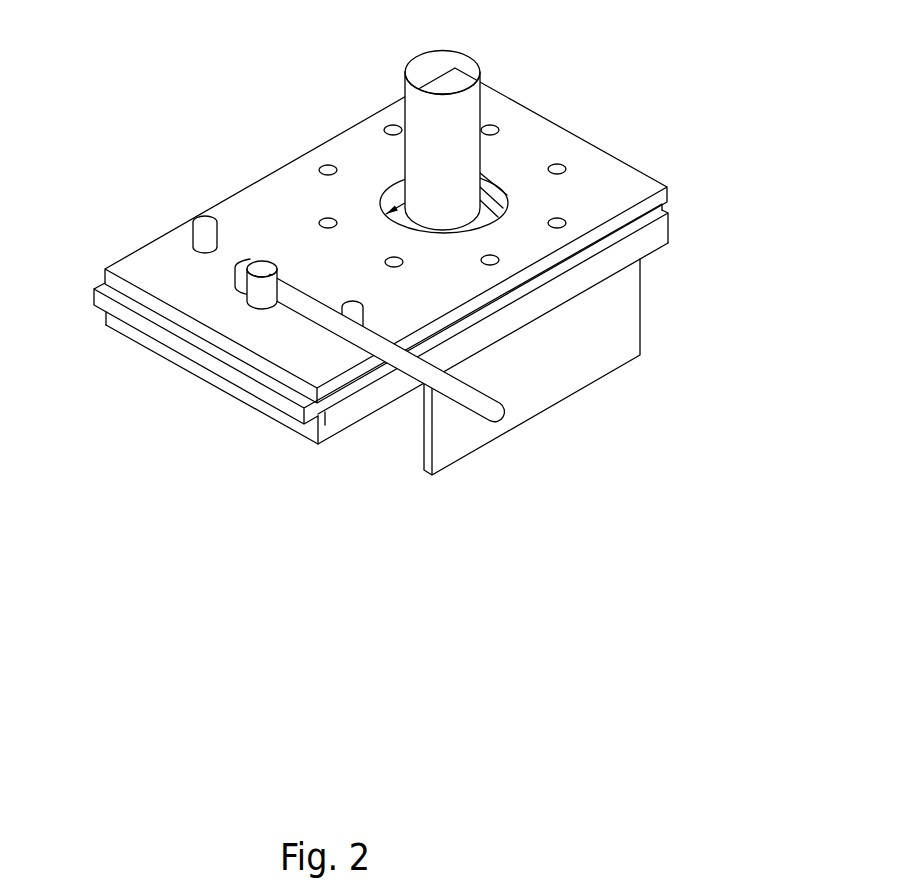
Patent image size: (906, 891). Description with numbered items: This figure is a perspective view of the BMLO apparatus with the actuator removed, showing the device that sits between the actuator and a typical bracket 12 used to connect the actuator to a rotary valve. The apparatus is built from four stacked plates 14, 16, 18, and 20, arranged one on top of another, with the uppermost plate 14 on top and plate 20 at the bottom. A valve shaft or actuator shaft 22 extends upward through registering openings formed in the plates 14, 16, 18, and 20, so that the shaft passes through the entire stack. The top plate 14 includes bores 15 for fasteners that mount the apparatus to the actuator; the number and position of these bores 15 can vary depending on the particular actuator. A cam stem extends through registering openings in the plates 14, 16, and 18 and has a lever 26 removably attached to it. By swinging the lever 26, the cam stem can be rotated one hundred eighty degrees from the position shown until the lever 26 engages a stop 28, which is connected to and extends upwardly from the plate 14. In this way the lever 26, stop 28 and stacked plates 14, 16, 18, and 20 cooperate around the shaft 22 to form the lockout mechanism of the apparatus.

The bracket 12 is at (525, 373).
The plate 14 is at (590, 195).
The bores 15 is at (402, 267).
The plate 16 is at (608, 242).
The plate 18 is at (567, 280).
The plate 20 is at (233, 392).
The actuator shaft 22 is at (430, 76).
The lever 26 is at (414, 371).
The stop 28 is at (203, 236).